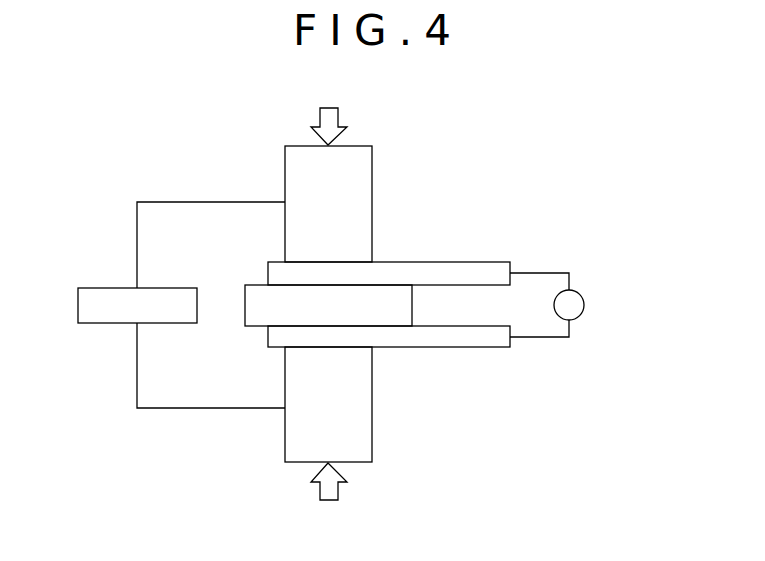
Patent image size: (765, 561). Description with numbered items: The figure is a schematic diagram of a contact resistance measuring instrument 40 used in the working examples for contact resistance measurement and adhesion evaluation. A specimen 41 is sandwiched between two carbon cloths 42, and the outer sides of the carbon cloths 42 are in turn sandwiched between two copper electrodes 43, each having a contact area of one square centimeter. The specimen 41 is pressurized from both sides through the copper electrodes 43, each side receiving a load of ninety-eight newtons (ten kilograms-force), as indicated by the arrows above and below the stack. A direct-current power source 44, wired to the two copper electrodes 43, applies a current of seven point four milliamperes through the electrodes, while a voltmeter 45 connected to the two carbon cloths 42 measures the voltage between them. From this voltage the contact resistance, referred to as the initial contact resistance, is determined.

The contact resistance measuring instrument 40 is at (458, 151).
The specimen 41 is at (245, 297).
The carbon cloths 42 is at (440, 277).
The copper electrodes 43 is at (366, 386).
The direct-current power source 44 is at (108, 287).
The voltmeter 45 is at (584, 305).